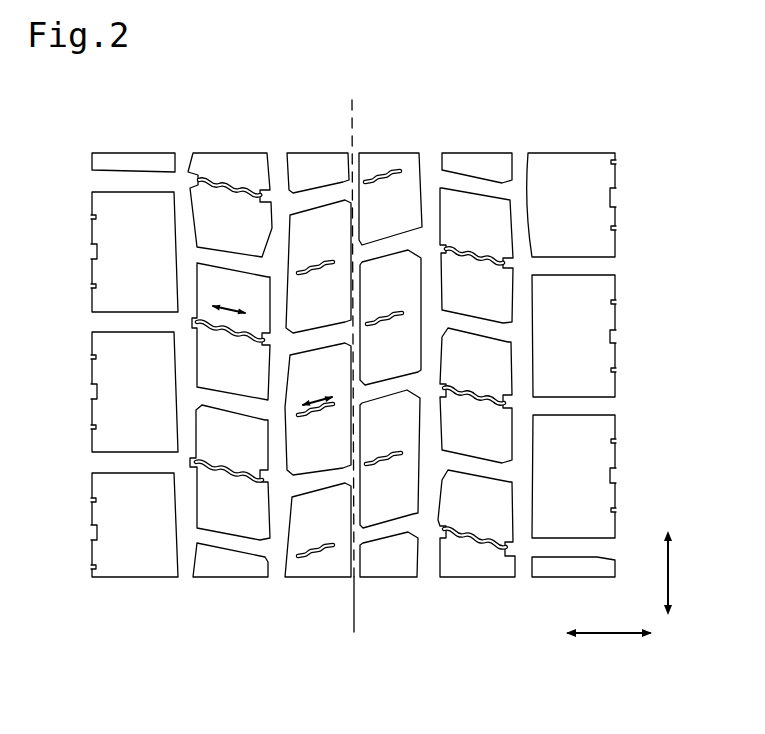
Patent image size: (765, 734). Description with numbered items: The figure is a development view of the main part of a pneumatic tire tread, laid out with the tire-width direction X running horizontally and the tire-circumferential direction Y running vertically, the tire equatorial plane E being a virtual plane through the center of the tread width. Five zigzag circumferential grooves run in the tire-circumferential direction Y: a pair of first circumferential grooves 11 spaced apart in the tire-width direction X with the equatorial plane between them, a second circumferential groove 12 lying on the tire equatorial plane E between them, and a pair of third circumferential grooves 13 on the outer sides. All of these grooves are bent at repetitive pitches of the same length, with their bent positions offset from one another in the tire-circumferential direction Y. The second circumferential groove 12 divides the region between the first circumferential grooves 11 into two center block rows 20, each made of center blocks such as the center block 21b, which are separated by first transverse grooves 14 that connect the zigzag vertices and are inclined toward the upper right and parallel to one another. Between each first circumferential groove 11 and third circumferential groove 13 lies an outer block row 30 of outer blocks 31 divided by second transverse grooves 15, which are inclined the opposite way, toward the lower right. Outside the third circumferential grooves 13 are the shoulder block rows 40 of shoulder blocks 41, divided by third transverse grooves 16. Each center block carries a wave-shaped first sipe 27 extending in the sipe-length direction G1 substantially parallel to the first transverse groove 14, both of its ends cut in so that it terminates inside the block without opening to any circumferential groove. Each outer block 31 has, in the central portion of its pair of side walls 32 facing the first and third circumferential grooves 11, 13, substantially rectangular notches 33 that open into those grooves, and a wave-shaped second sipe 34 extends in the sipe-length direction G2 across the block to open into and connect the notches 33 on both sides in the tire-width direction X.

The first circumferential groove 11 is at (280, 572).
The second circumferential groove 12 is at (358, 580).
The third circumferential groove 13 is at (186, 572).
The first transverse groove 14 is at (320, 200).
The second transverse groove 15 is at (217, 258).
The third transverse groove 16 is at (137, 183).
The center block row 20 is at (330, 146).
The center block 21b is at (318, 523).
The first sipe 27 is at (318, 262).
The outer block row 30 is at (240, 146).
The outer block 31 is at (240, 512).
The side wall 32 is at (262, 397).
The notch 33 is at (190, 460).
The second sipe 34 is at (190, 447).
The shoulder block row 40 is at (151, 146).
The shoulder block 41 is at (132, 533).
The tire equatorial plane E is at (353, 348).
The tire-width direction X is at (609, 619).
The tire-circumferential direction Y is at (680, 573).
The sipe-length direction G1 is at (317, 385).
The sipe-length direction G2 is at (229, 296).